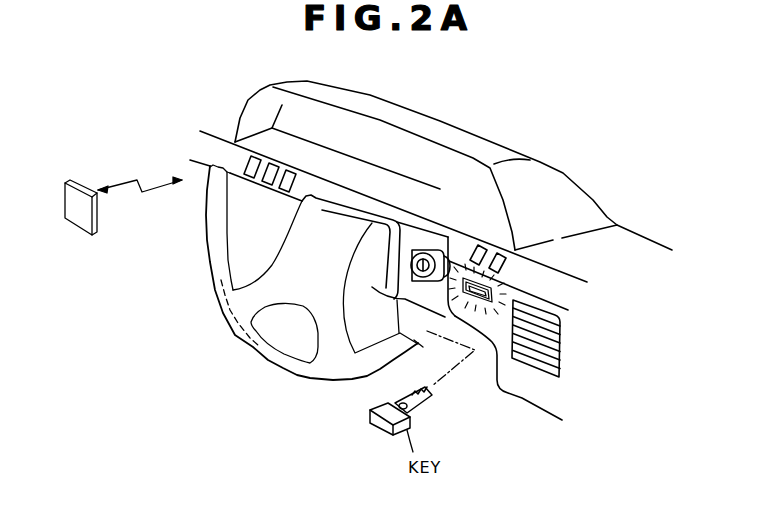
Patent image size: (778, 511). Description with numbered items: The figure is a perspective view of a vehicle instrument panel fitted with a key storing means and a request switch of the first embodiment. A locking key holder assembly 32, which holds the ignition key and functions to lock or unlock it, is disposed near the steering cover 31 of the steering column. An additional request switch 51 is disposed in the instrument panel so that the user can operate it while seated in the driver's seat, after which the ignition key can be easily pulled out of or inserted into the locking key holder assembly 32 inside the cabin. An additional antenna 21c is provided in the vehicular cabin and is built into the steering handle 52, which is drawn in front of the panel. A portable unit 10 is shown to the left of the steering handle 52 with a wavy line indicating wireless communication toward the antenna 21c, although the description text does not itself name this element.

The portable card transmitter 10 is at (97, 230).
The antenna 21c is at (230, 322).
The steering cover 31 is at (404, 296).
The locking key holder assembly 32 is at (488, 320).
The request switch 51 is at (508, 252).
The steering handle 52 is at (272, 360).